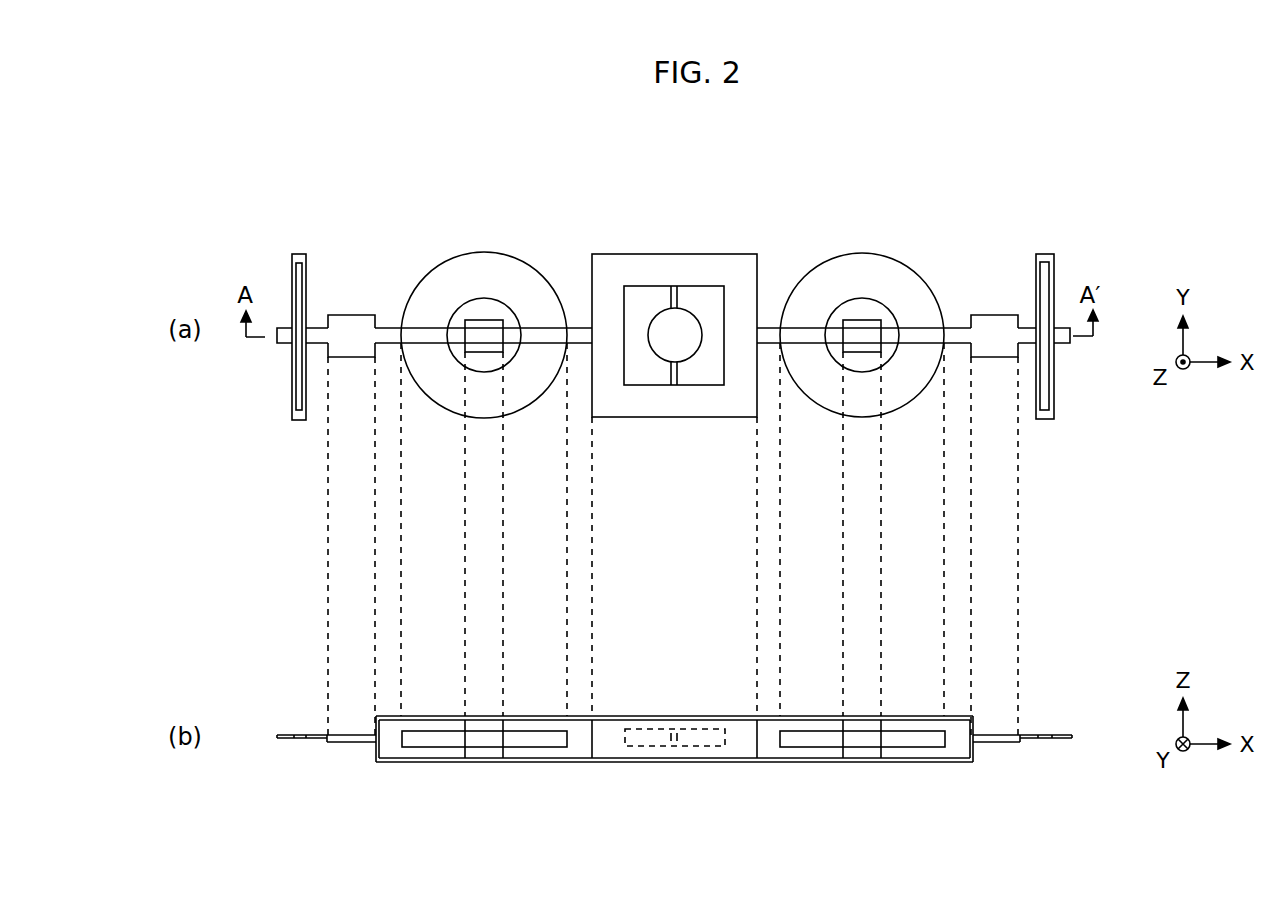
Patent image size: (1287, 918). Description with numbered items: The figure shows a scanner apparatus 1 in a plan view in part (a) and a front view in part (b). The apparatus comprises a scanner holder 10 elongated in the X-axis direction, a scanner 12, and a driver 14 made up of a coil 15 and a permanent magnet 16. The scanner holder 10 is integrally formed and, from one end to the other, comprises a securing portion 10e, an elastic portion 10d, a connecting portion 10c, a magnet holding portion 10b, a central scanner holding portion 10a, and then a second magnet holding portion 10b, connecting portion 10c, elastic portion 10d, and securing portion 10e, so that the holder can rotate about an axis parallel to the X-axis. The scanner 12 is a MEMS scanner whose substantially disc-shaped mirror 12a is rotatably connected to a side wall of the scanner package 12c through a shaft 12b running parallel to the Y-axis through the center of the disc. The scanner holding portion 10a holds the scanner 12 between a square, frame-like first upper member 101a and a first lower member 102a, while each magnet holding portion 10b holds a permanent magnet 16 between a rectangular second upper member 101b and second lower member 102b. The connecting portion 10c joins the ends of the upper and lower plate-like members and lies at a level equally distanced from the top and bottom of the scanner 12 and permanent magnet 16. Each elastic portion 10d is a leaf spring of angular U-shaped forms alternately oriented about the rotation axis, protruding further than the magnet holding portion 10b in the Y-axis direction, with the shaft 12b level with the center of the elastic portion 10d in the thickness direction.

The scanner apparatus 1 is at (988, 167).
The scanner holder 10 is at (1115, 192).
The scanner holding portion 10a is at (645, 273).
The magnet holding portion 10b is at (547, 333).
The connecting portion 10c is at (357, 323).
The elastic portion 10d is at (297, 254).
The securing portion 10e is at (283, 340).
The scanner 12 is at (755, 792).
The mirror 12a is at (664, 345).
The shaft 12b is at (676, 373).
The scanner package 12c is at (593, 737).
The driver 14 is at (408, 464).
The coil 15 is at (443, 385).
The permanent magnet 16 is at (487, 350).
The first upper member 101a is at (620, 715).
The second upper member 101b is at (528, 715).
The first lower member 102a is at (727, 757).
The second lower member 102b is at (518, 759).